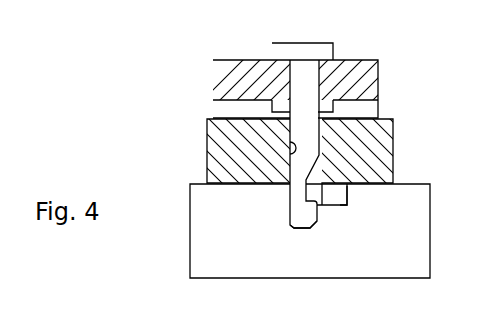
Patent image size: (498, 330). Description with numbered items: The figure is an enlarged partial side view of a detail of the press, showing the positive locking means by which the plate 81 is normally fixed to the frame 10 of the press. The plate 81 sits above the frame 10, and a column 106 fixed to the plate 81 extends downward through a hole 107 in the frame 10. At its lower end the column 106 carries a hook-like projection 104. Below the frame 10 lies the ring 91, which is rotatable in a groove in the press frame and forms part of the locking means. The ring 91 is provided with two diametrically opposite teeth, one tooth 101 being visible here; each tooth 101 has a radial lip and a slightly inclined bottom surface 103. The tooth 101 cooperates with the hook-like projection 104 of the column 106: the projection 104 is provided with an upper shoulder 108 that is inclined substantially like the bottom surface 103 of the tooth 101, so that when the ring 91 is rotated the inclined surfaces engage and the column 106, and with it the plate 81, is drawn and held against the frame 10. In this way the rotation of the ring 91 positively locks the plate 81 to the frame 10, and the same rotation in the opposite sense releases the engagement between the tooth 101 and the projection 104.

The plate 81 is at (233, 75).
The frame 10 is at (220, 133).
The hole 107 is at (288, 153).
The column 106 is at (310, 130).
The bottom surface 103 is at (330, 202).
The tooth 101 is at (348, 203).
The upper shoulder 108 is at (292, 205).
The hook-like projection 104 is at (308, 213).
The ring 91 is at (193, 248).